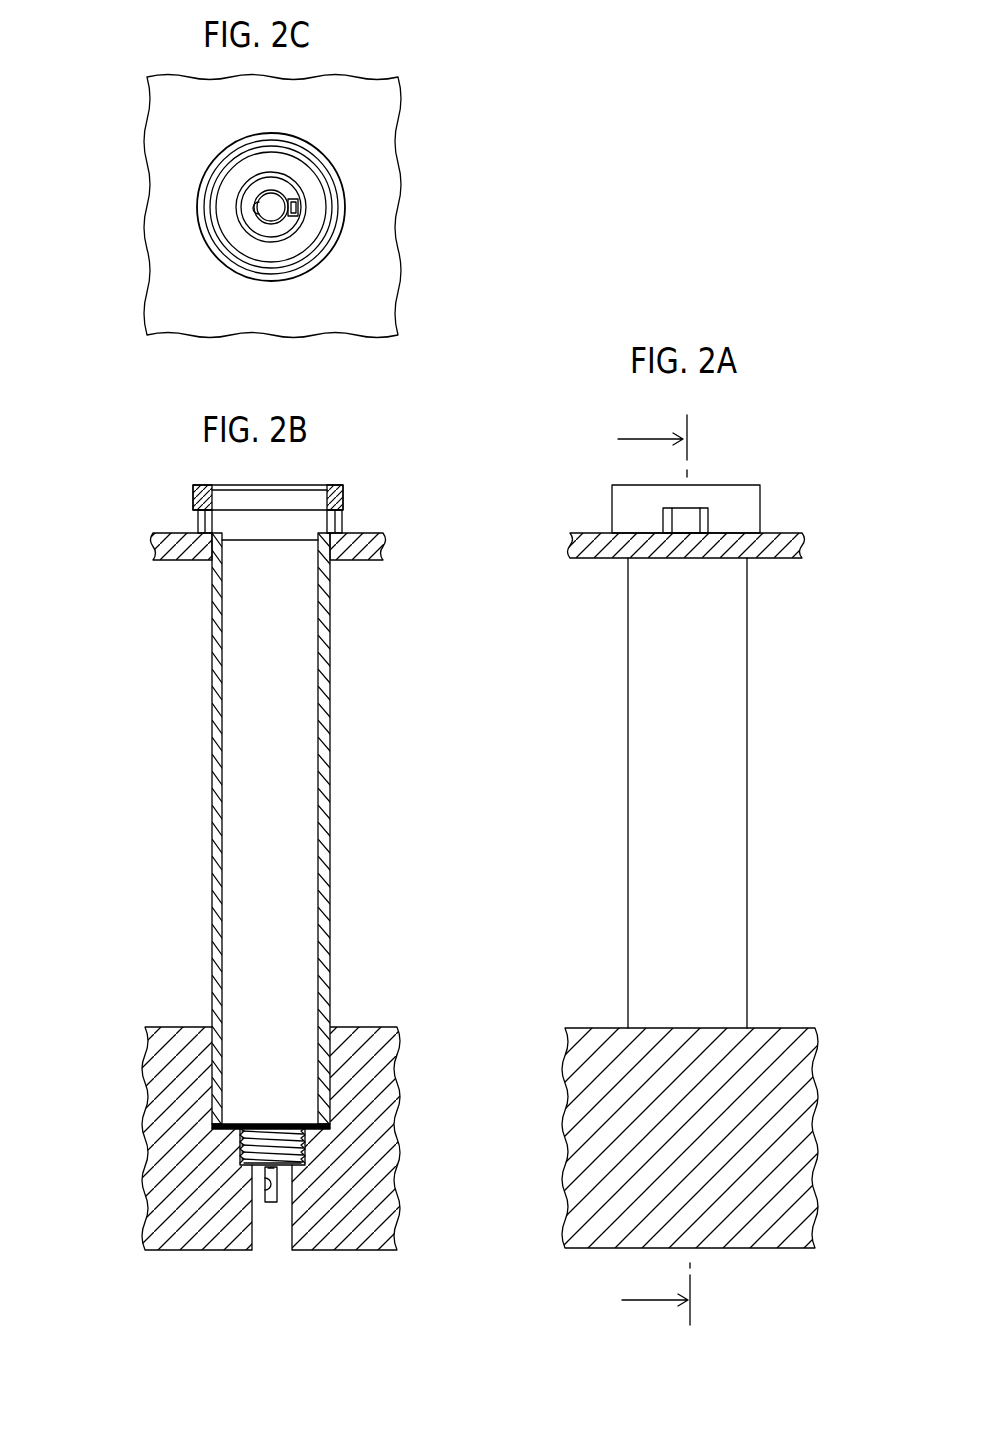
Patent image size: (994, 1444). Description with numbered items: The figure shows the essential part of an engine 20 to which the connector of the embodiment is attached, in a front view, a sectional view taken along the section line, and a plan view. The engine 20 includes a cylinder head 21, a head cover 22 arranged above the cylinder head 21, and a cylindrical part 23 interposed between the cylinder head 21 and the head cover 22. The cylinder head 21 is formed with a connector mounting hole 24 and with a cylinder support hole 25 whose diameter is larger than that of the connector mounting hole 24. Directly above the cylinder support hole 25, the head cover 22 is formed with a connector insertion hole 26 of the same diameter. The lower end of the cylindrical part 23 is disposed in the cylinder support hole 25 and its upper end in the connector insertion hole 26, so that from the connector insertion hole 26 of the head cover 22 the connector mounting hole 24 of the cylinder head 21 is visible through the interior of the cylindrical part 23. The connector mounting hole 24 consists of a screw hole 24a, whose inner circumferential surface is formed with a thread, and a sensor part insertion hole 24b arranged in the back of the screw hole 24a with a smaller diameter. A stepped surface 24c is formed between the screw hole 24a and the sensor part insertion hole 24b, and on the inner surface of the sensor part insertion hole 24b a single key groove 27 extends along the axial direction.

In FIG. 2C, the engine 20 is at (137, 120).
In FIG. 2B, the engine 20 is at (157, 517).
In FIG. 2A, the engine 20 is at (577, 515).
In FIG. 2B, the cylinder head 21 is at (377, 1067).
In FIG. 2C, the head cover 22 is at (372, 198).
In FIG. 2B, the head cover 22 is at (383, 540).
In FIG. 2A, the head cover 22 is at (802, 540).
In FIG. 2C, the cylindrical part 23 is at (300, 255).
In FIG. 2B, the cylindrical part 23 is at (330, 762).
In FIG. 2A, the cylindrical part 23 is at (725, 773).
In FIG. 2C, the connector mounting hole 24 is at (175, 227).
In FIG. 2B, the connector mounting hole 24 is at (373, 1187).
In FIG. 2C, the screw hole 24a is at (248, 207).
In FIG. 2B, the screw hole 24a is at (305, 1137).
In FIG. 2C, the sensor part insertion hole 24b is at (257, 218).
In FIG. 2B, the sensor part insertion hole 24b is at (283, 1222).
In FIG. 2C, the stepped surface 24c is at (252, 240).
In FIG. 2B, the stepped surface 24c is at (307, 1153).
In FIG. 2B, the cylinder support hole 25 is at (330, 1118).
In FIG. 2C, the connector insertion hole 26 is at (332, 228).
In FIG. 2B, the connector insertion hole 26 is at (330, 497).
In FIG. 2C, the key groove 27 is at (310, 205).
In FIG. 2B, the key groove 27 is at (265, 1192).